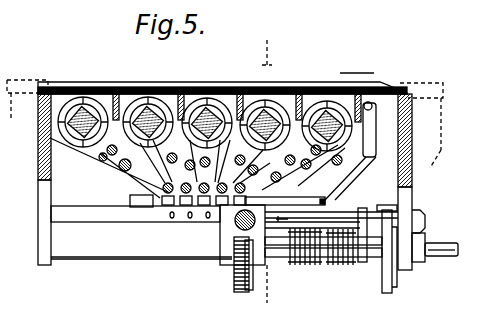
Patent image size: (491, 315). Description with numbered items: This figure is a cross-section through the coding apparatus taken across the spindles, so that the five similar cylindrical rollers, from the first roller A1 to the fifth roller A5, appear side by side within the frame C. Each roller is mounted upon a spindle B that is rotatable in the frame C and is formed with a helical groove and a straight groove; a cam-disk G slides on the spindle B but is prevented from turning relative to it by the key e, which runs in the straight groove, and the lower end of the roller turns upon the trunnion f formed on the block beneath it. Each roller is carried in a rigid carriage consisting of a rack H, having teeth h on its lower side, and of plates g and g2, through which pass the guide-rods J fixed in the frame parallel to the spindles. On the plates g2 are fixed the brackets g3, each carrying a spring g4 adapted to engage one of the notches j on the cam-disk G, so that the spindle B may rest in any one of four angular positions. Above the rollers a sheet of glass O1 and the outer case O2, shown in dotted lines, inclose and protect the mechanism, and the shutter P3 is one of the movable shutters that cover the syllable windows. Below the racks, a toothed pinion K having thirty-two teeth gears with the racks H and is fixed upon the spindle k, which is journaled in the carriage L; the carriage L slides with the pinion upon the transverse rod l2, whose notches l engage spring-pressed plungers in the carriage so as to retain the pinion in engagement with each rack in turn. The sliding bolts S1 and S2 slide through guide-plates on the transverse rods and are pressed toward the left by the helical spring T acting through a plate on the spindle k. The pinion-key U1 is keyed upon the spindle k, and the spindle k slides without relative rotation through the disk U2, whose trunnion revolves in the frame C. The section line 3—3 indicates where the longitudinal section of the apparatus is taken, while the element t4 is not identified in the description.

The roller A1 is at (70, 87).
The roller A5 is at (357, 65).
The frame C is at (38, 165).
The outer case O2 is at (427, 162).
The section line 3— 3 is at (271, 172).
The cam-disk G is at (151, 105).
The plate g is at (84, 105).
The plate g2 is at (373, 162).
The bracket g3 is at (197, 168).
The spring g4 is at (302, 73).
The key e is at (364, 140).
The guide-rods J is at (271, 177).
The teeth h is at (188, 195).
The rack H is at (163, 192).
The rod l2 is at (141, 242).
The notches l is at (190, 227).
The carriage L is at (220, 228).
The toothed pinion K is at (234, 280).
The pinion-key U1 is at (251, 275).
The disk U2 is at (377, 257).
The helical spring T is at (321, 245).
The pin t4 is at (287, 220).
The sliding bolt S1 is at (345, 261).
The sliding bolt S2 is at (304, 261).
The spindle k is at (441, 258).
The sheet of glass O1 is at (123, 87).
The shutter P3 is at (190, 87).
The spindle B is at (207, 108).
The notches j is at (276, 105).
The trunnion f is at (60, 118).